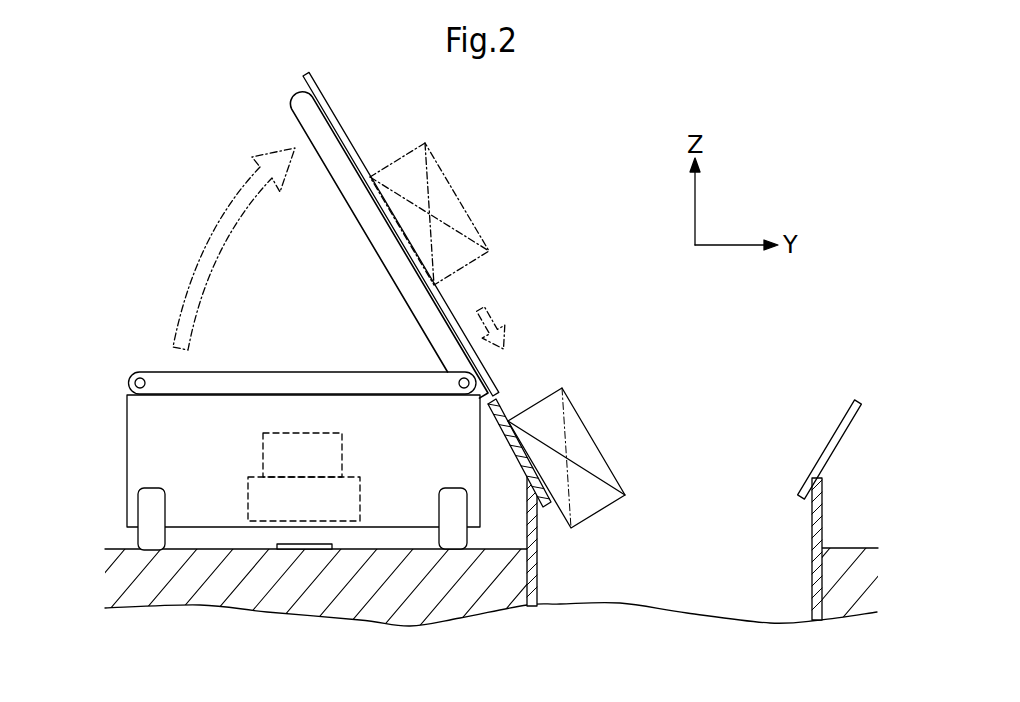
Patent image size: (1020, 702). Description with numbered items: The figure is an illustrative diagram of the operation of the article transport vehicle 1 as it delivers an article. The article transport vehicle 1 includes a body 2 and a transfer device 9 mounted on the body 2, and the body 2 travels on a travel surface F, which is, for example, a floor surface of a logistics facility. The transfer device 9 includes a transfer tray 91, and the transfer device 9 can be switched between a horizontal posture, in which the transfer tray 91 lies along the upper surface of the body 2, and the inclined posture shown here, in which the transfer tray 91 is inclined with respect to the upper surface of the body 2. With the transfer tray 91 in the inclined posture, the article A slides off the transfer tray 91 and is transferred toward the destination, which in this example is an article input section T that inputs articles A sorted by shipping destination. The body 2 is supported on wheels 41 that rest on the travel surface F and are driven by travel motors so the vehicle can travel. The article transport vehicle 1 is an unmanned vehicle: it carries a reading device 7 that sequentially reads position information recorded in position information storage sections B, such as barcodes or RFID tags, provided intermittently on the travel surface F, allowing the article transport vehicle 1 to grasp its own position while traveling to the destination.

The article transport vehicle 1 is at (137, 343).
The body 2 is at (113, 412).
The reading device 7 is at (302, 433).
The transfer device 9 is at (280, 84).
The transfer tray 91 is at (330, 108).
The wheels 41 is at (152, 500).
The article A is at (580, 417).
The position information storage section B is at (286, 549).
The travel surface F is at (117, 550).
The article input section T is at (700, 502).